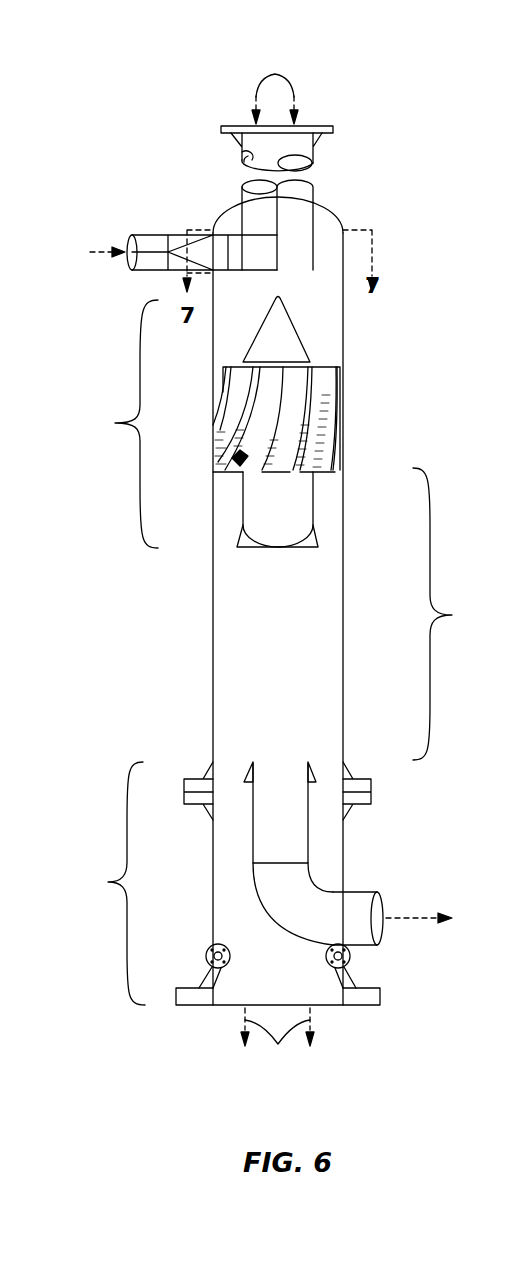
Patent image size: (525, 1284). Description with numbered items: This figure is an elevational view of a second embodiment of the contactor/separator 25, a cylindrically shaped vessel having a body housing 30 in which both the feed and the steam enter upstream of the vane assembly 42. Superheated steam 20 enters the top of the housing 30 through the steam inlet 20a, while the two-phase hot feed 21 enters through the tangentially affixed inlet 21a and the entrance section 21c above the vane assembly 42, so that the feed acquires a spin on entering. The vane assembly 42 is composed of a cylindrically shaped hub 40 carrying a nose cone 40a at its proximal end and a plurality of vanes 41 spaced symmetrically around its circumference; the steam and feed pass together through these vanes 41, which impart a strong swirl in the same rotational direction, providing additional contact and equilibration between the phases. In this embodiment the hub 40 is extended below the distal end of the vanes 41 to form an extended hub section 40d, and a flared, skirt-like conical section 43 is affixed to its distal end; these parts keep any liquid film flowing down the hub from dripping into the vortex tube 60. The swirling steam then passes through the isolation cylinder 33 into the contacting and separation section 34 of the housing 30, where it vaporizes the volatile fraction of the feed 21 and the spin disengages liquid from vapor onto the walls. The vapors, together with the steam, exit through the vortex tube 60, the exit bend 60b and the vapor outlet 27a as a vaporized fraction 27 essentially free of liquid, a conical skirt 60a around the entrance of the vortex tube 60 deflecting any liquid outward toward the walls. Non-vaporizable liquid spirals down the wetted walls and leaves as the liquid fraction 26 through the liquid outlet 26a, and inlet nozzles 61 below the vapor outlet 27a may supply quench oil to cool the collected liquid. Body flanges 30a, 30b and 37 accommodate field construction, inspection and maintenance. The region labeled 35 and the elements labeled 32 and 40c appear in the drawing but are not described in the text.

The steam 20 is at (275, 85).
The steam inlet 20a is at (247, 158).
The two-phase hot feed 21 is at (95, 227).
The inlet 21a is at (152, 234).
The entrance section 21c is at (258, 262).
The contactor/separator 25 is at (142, 40).
The liquid fraction 26 is at (277, 1045).
The liquid outlet 26a is at (215, 985).
The vaporized fraction 27 is at (434, 908).
The vapor outlet 27a is at (365, 888).
The body housing 30 is at (213, 623).
The body flange 30a is at (322, 128).
The body flange 30b is at (383, 1005).
The inlet pipe 32 is at (328, 232).
The isolation cylinder 33 is at (317, 258).
The contacting and separation section 34 is at (448, 614).
The lower section 35 is at (110, 883).
The body flange 37 is at (372, 797).
The hub 40 is at (293, 380).
The nose cone 40a is at (290, 325).
The blade root 40c is at (216, 472).
The extended hub section 40d is at (292, 505).
The vanes 41 is at (320, 417).
The vane assembly 42 is at (121, 424).
The flared conical section 43 is at (318, 544).
The vortex tube 60 is at (310, 848).
The conical skirt 60a is at (251, 776).
The exit bend 60b is at (255, 878).
The inlet nozzles 61 is at (350, 958).